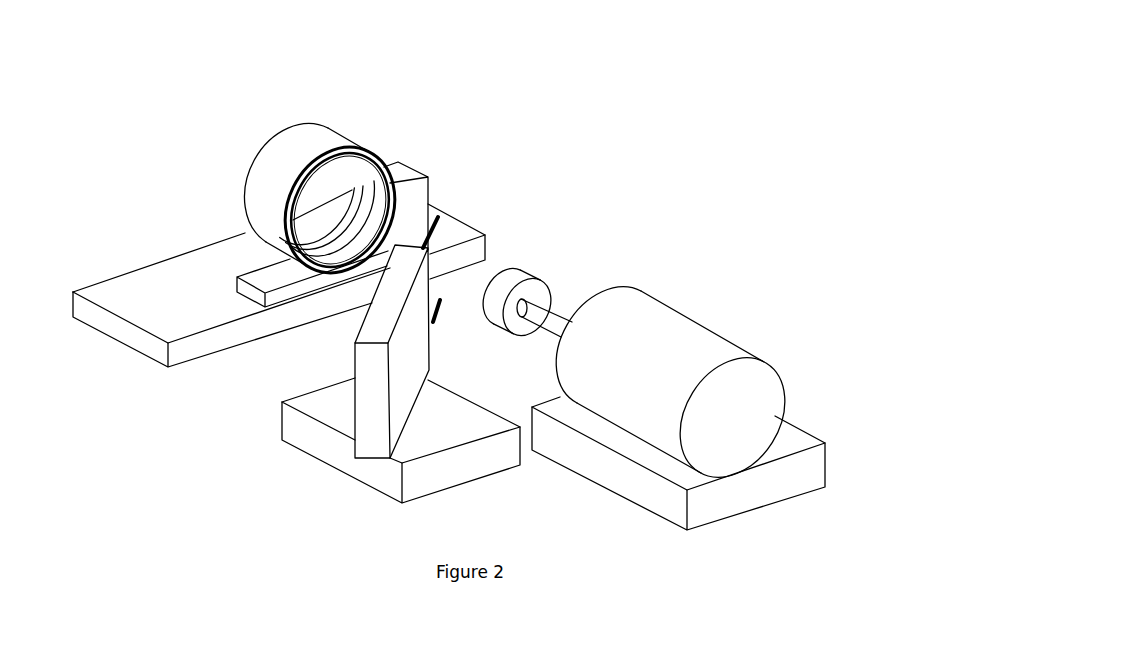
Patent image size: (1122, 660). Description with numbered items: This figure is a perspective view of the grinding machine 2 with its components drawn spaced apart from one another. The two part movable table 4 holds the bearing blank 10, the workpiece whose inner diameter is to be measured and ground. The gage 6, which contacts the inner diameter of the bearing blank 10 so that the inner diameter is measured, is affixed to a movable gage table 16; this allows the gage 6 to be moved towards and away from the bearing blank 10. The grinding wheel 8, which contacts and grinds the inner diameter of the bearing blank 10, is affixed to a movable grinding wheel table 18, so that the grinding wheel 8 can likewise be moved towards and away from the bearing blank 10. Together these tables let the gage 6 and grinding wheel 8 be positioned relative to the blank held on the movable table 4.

The grinding machine 2 is at (723, 97).
The movable table 4 is at (182, 277).
The gage 6 is at (378, 328).
The grinding wheel 8 is at (655, 347).
The bearing blank 10 is at (313, 135).
The movable gage table 16 is at (393, 482).
The movable grinding wheel table 18 is at (793, 482).